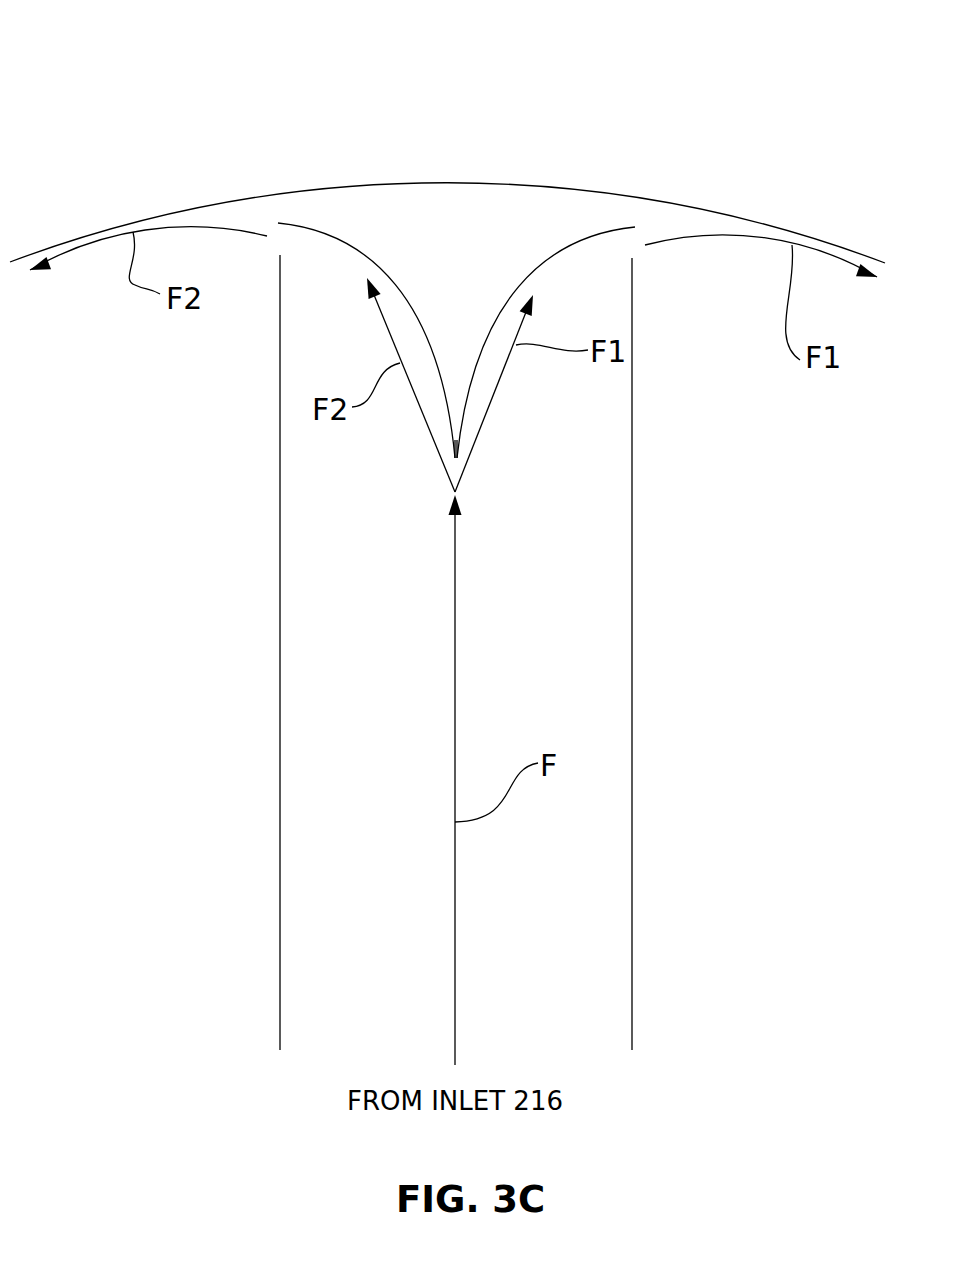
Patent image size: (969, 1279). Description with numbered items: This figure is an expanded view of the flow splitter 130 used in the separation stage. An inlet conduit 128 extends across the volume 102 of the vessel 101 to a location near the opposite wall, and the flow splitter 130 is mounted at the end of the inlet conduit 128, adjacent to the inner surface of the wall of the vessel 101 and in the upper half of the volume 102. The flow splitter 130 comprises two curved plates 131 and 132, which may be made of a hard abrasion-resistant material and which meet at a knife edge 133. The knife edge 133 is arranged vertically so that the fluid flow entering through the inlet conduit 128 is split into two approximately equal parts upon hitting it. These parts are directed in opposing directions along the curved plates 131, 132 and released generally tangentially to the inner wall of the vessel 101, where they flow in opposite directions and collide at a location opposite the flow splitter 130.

The vessel 101 is at (753, 222).
The volume 102 is at (730, 290).
The inlet conduit 128 is at (313, 808).
The flow splitter 130 is at (307, 340).
The curved plate 131 is at (511, 288).
The curved plate 132 is at (403, 288).
The knife edge 133 is at (458, 458).